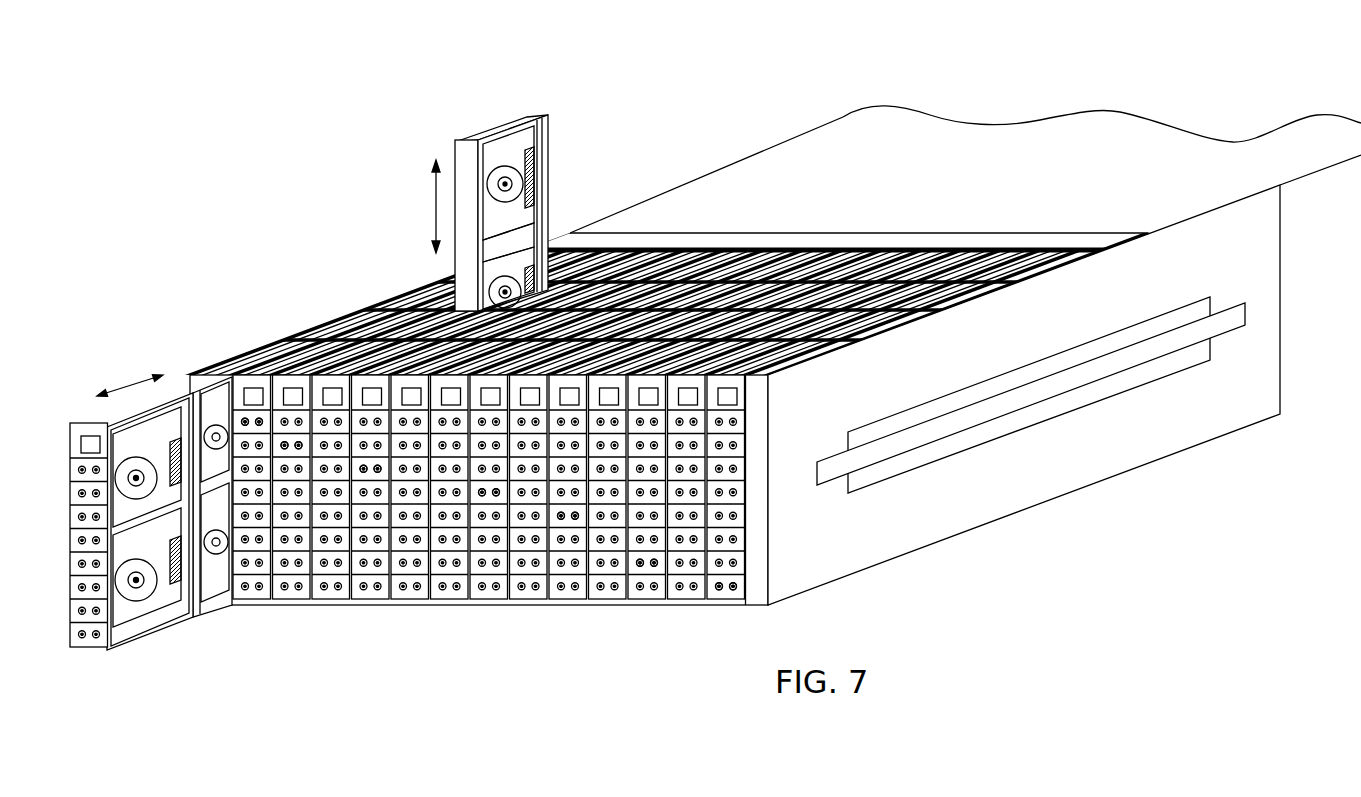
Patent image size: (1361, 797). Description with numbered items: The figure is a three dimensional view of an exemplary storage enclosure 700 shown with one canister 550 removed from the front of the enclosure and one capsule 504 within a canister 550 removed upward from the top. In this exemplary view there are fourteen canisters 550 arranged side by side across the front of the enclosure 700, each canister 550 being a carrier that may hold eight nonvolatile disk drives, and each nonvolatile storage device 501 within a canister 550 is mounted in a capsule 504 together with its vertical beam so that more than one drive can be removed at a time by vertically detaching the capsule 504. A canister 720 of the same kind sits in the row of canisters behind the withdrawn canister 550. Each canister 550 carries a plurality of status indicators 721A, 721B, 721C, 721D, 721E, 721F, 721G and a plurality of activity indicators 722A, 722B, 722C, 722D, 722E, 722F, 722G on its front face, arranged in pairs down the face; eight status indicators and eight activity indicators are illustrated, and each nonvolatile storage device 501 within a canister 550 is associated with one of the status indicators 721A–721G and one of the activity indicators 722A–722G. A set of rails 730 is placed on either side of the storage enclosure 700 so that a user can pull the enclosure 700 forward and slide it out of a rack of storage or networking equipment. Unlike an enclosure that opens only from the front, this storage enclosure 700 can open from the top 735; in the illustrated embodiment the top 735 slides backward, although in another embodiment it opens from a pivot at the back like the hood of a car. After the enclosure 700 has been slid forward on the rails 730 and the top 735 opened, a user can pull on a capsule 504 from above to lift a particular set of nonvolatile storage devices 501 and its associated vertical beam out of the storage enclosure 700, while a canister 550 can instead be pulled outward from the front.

The storage enclosure 700 is at (1112, 600).
The canister 720 is at (292, 389).
The status indicator 721A is at (245, 418).
The activity indicator 722A is at (259, 418).
The status indicator 721B is at (284, 450).
The activity indicator 722B is at (298, 450).
The status indicator 721C is at (364, 473).
The activity indicator 722C is at (378, 473).
The status indicator 721D is at (482, 496).
The activity indicator 722D is at (496, 496).
The status indicator 721E is at (561, 520).
The activity indicator 722E is at (575, 520).
The status indicator 721F is at (640, 567).
The activity indicator 722F is at (654, 567).
The status indicator 721G is at (719, 590).
The activity indicator 722G is at (733, 590).
The rails 730 is at (1190, 360).
The top 735 is at (1207, 188).
The nonvolatile storage device 501 is at (550, 142).
The capsule 504 is at (508, 116).
The canister 550 is at (107, 652).